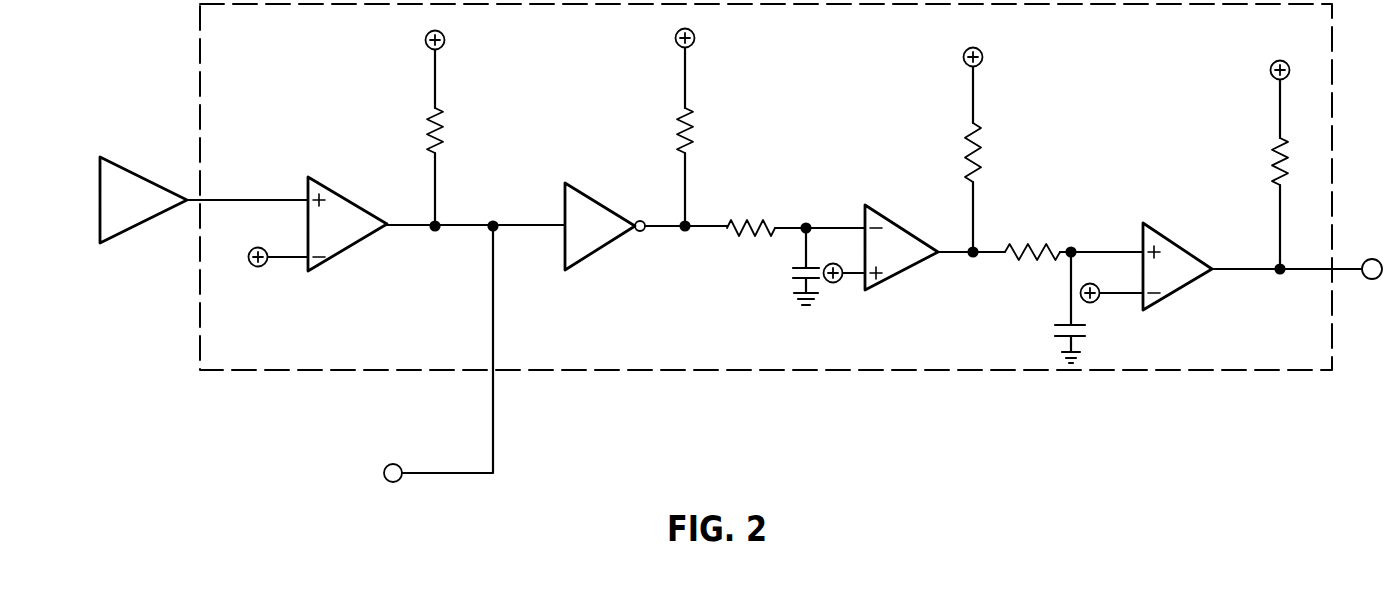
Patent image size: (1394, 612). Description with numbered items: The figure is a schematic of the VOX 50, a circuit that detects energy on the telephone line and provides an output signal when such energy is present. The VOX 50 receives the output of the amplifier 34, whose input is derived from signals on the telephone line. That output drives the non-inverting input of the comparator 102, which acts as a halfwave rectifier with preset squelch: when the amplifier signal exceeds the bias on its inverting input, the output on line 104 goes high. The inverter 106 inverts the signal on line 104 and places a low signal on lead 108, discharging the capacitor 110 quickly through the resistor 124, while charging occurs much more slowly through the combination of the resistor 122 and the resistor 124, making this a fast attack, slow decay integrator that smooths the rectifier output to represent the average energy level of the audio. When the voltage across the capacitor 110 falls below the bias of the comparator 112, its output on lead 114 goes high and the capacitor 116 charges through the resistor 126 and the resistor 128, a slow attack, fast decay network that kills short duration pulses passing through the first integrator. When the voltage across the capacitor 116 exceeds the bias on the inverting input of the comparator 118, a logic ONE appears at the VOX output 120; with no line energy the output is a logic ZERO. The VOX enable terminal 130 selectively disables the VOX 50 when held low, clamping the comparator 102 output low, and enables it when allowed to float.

The amplifier 34 is at (153, 182).
The VOX 50 is at (835, 371).
The comparator 102 is at (363, 205).
The line 104 is at (460, 229).
The inverter 106 is at (628, 172).
The lead 108 is at (677, 230).
The capacitor 110 is at (790, 272).
The comparator 112 is at (880, 213).
The lead 114 is at (972, 260).
The capacitor 116 is at (1052, 333).
The comparator 118 is at (1170, 240).
The VOX output 120 is at (1377, 282).
The resistor 122 is at (697, 133).
The resistor 124 is at (733, 223).
The resistor 126 is at (982, 142).
The resistor 128 is at (1023, 240).
The VOX enable terminal 130 is at (388, 482).